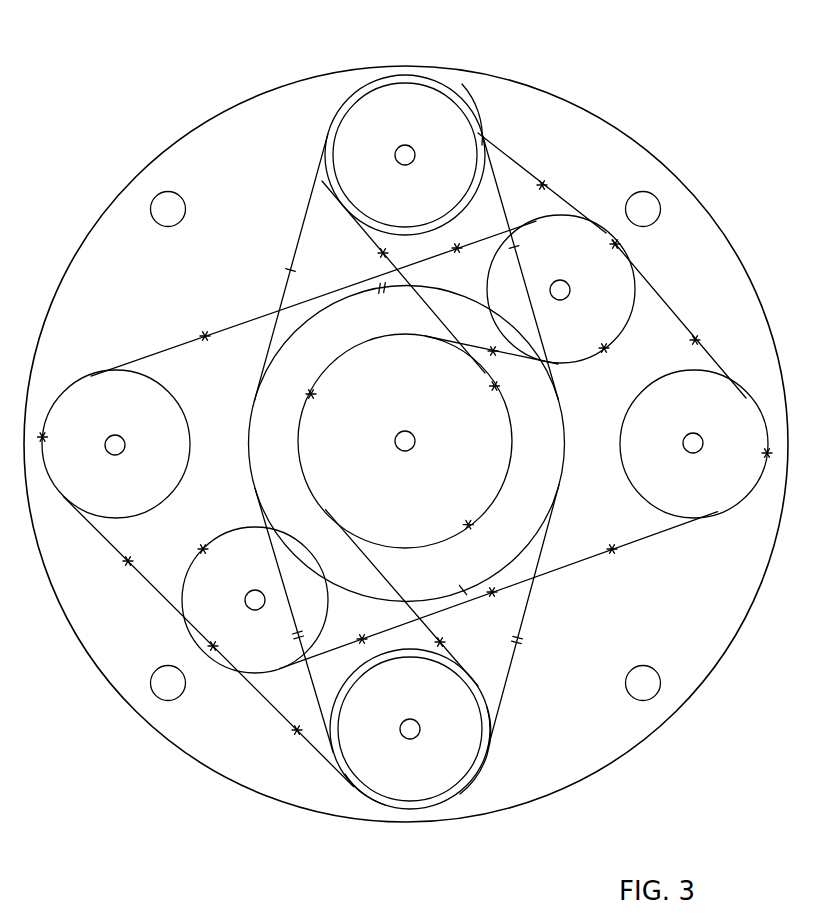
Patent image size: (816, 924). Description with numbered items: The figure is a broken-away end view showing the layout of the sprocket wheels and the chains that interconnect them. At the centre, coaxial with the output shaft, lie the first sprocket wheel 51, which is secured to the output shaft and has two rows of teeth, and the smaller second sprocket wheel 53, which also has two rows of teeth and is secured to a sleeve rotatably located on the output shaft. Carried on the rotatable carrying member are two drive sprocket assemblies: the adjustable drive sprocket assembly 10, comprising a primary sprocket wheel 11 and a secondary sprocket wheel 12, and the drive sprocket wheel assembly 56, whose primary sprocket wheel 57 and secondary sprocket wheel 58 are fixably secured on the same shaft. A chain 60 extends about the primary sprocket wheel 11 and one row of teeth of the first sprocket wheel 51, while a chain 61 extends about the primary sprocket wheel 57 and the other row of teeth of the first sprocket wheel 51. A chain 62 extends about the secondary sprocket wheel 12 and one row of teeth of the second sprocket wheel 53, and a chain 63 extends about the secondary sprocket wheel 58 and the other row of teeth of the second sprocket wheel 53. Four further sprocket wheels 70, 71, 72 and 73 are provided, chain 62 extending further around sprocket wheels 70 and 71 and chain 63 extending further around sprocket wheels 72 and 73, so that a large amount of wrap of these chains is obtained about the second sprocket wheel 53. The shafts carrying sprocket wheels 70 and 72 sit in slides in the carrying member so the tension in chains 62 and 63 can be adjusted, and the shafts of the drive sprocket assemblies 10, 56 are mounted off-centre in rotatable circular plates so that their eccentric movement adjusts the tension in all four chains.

The sprocket assembly 10 is at (381, 58).
The primary sprocket wheel 11 is at (450, 181).
The secondary sprocket wheel 12 is at (478, 133).
The first sprocket wheel 51 is at (546, 441).
The second sprocket wheel 53 is at (424, 425).
The drive sprocket wheel assembly 56 is at (362, 806).
The primary sprocket wheel 57 is at (397, 783).
The secondary sprocket wheel 58 is at (473, 775).
The chain 60 is at (496, 185).
The chain 61 is at (315, 316).
The chain 62 is at (563, 205).
The chain 63 is at (247, 320).
The further sprocket wheel 70 is at (680, 423).
The further sprocket wheel 71 is at (239, 645).
The further sprocket wheel 72 is at (112, 496).
The further sprocket wheel 73 is at (561, 289).